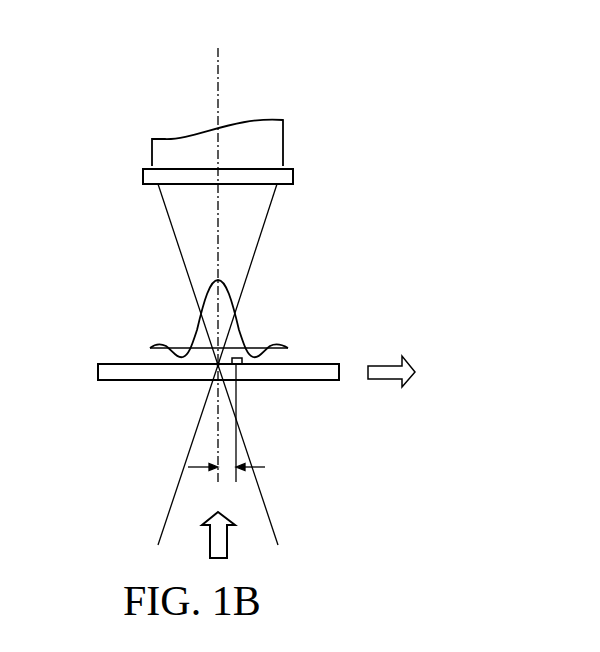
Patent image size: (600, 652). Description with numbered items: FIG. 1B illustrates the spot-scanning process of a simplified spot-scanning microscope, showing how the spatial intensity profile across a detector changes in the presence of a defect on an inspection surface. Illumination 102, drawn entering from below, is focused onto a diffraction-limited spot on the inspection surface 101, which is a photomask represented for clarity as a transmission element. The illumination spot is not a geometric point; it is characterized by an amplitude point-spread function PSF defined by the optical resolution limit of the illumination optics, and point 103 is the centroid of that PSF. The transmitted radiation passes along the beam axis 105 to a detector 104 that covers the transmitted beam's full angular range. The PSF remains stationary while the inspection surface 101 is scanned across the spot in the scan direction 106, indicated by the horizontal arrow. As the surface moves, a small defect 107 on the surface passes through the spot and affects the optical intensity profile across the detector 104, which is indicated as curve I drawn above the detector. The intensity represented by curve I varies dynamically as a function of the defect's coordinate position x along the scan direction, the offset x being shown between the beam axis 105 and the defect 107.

The inspection surface 101 is at (125, 363).
The illumination 102 is at (210, 515).
The point 103 is at (215, 362).
The detector 104 is at (185, 185).
The beam axis 105 is at (215, 78).
The scan direction 106 is at (412, 370).
The defect 107 is at (238, 358).
The curve I is at (185, 136).
The amplitude point-spread function PSF is at (215, 283).
The coordinate position x is at (235, 423).